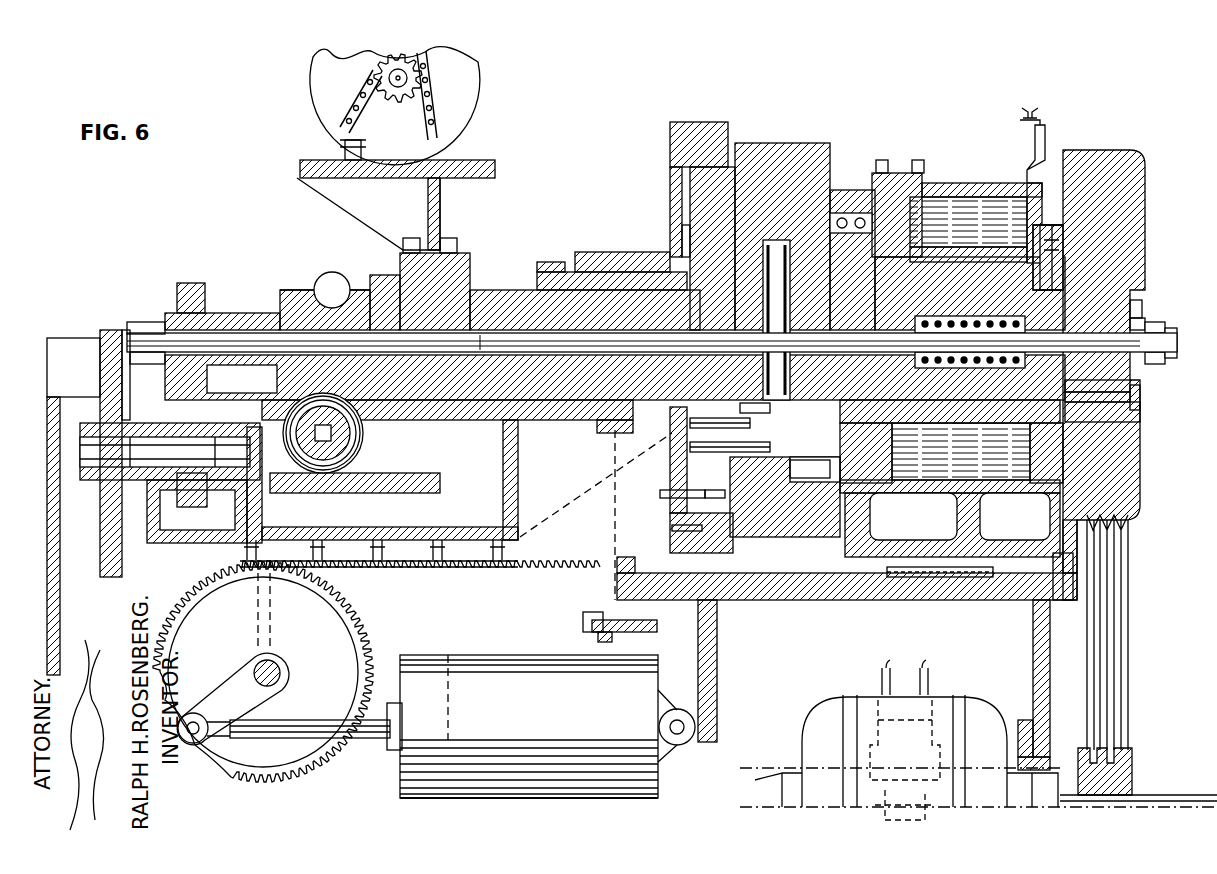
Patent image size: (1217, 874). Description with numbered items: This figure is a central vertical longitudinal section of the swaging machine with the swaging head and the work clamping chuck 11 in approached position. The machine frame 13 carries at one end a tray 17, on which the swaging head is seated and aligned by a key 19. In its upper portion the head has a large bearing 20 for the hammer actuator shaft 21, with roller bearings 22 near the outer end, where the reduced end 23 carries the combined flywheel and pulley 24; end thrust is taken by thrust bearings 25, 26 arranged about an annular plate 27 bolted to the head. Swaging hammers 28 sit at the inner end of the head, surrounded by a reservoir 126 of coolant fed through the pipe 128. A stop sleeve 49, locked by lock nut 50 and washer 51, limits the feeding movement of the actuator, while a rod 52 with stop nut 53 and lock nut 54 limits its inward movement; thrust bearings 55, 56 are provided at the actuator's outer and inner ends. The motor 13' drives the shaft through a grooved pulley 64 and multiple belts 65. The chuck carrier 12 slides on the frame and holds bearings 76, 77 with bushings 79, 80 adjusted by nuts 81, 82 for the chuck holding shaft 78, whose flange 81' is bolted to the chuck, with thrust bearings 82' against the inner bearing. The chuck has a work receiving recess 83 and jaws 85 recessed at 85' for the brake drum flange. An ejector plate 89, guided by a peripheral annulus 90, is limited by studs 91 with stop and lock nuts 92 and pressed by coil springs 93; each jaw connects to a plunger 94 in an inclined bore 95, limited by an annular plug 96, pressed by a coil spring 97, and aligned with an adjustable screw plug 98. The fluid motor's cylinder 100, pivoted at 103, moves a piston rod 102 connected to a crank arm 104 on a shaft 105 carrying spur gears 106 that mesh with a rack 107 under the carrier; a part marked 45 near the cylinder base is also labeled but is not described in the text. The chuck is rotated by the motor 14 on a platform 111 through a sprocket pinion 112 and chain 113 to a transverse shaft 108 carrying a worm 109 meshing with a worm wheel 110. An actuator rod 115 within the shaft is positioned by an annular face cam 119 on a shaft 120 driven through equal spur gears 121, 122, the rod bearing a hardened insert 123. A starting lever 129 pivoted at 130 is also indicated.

The work clamping chuck 11 is at (770, 143).
The chuck carrier 12 is at (518, 503).
The machine frame 13 is at (562, 547).
The motor for driving the swaging actuator 13' is at (978, 740).
The motor for rotating the chuck 14 is at (472, 100).
The tray 17 is at (1065, 560).
The key 19 is at (910, 578).
The bearing 20 is at (952, 525).
The swaging hammer actuator shaft 21 is at (962, 290).
The roller bearings 22 is at (1000, 235).
The reduced end 23 is at (1097, 423).
The combined flywheel and pulley 24 is at (1140, 245).
The thrust bearing 25 is at (1150, 202).
The thrust bearing 26 is at (1050, 235).
The annular plate 27 is at (1055, 270).
The swaging hammers 28 is at (1133, 372).
The cylinder base 45 is at (514, 800).
The stop sleeve 49 is at (1138, 408).
The lock nut 50 is at (1148, 318).
The washer 51 is at (1140, 305).
The rod 52 is at (1128, 398).
The stop nut 53 is at (1167, 322).
The lock nut 54 is at (1177, 340).
The thrust bearing 55 is at (936, 316).
The thrust bearing 56 is at (779, 320).
The grooved pulley 64 is at (1132, 778).
The multiple belts 65 is at (1130, 655).
The bearing 76 is at (475, 268).
The inner bearing 77 is at (620, 263).
The chuck holding shaft 78 is at (520, 290).
The bearing bushing 79 is at (465, 262).
The bearing bushing 80 is at (590, 278).
The nut 81 is at (385, 289).
The flange 81' is at (656, 199).
The nut 82 is at (563, 248).
The thrust bearings 82' is at (660, 219).
The work receiving recess 83 is at (778, 232).
The jaws 85 is at (881, 208).
The jaw recess 85' is at (851, 223).
The ejector plate 89 is at (670, 130).
The peripheral annulus 90 is at (710, 553).
The studs 91 is at (680, 492).
The stop and lock nuts 92 is at (700, 498).
The coil springs 93 is at (690, 522).
The spring pressed plunger 94 is at (752, 470).
The inclined bore 95 is at (750, 413).
The annular plug 96 is at (825, 470).
The coil spring 97 is at (690, 430).
The adjustable screw plug 98 is at (690, 455).
The cylinder 100 is at (505, 676).
The piston rod 102 is at (287, 720).
The pivotal connection 103 is at (680, 736).
The crank arm 104 is at (235, 678).
The shaft 105 is at (273, 664).
The spur gears 106 is at (358, 620).
The rack 107 is at (465, 568).
The transverse shaft 108 is at (312, 427).
The worm 109 is at (358, 438).
The worm wheel 110 is at (318, 282).
The platform 111 is at (470, 165).
The sprocket pinion 112 is at (430, 68).
The chain 113 is at (440, 118).
The actuator rod 115 is at (268, 328).
The annular face cam 119 is at (108, 332).
The shaft 120 is at (110, 462).
The spur gear 121 is at (188, 507).
The spur gear 122 is at (190, 295).
The hardened insert 123 is at (128, 345).
The reservoir 126 is at (990, 483).
The pipe 128 is at (905, 183).
The starting lever 129 is at (608, 634).
The pivot 130 is at (590, 618).